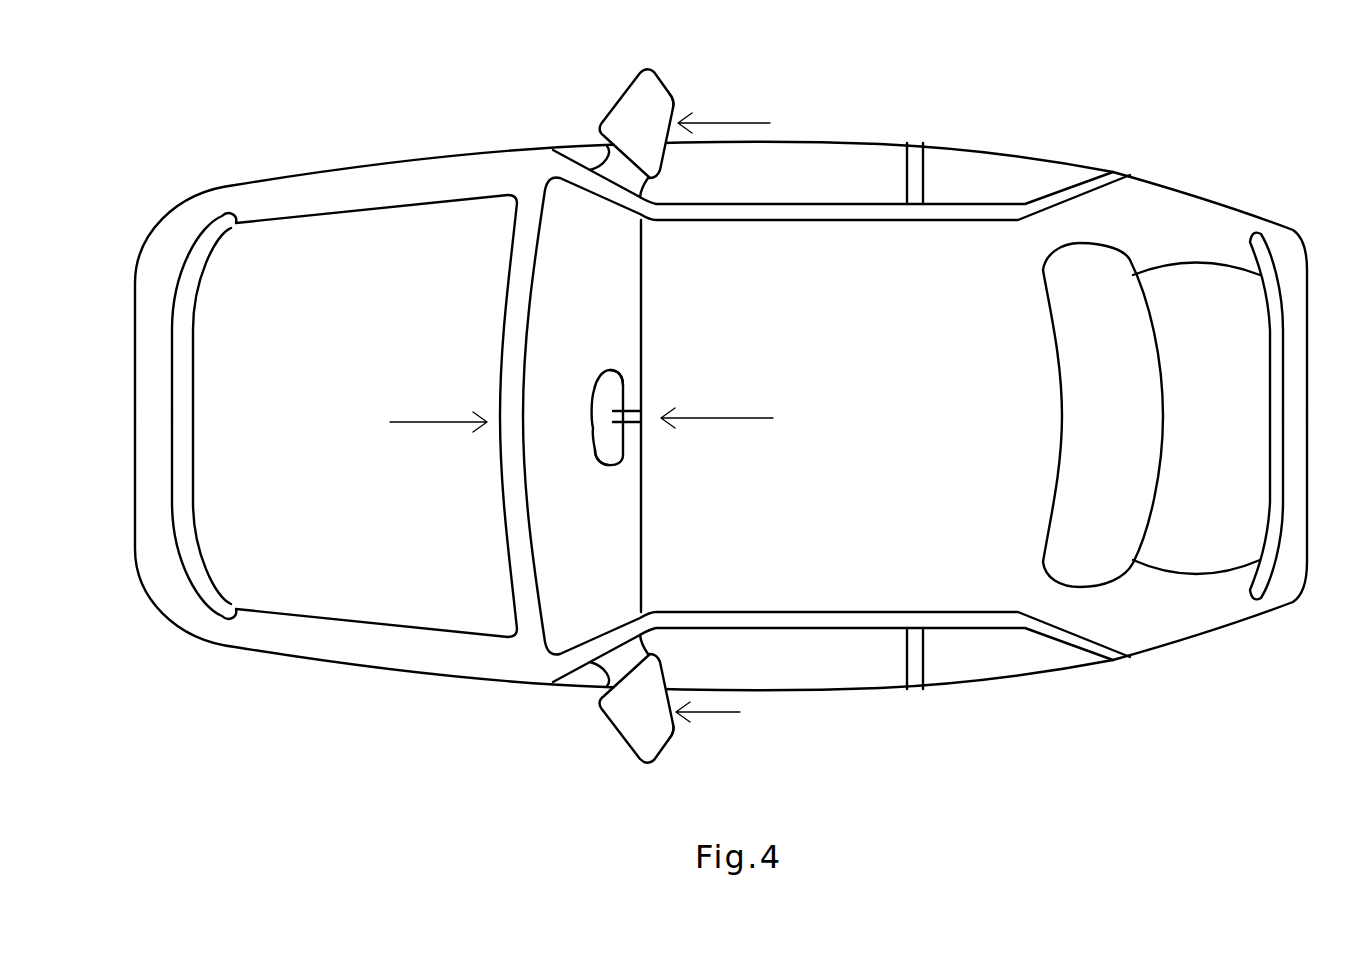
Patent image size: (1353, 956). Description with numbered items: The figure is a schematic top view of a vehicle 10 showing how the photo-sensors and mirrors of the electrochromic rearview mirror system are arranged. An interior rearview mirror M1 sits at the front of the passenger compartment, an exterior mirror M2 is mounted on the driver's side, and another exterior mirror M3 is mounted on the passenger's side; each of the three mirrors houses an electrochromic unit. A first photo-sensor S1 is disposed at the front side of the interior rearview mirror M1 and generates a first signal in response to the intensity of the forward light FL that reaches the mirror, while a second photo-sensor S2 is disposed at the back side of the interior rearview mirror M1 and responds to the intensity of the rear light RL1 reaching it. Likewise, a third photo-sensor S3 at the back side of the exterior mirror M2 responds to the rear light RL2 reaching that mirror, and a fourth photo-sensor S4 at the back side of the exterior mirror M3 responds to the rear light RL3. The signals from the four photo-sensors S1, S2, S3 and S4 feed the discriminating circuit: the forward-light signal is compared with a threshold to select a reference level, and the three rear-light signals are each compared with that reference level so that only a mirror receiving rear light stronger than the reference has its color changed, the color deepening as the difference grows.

The vehicle 10 is at (280, 258).
The interior rearview mirror M1 is at (613, 437).
The exterior mirror at the driver's side M2 is at (632, 122).
The exterior mirror at the passenger's side M3 is at (628, 702).
The first photo-sensor S1 is at (598, 448).
The second photo-sensor S2 is at (625, 390).
The third photo-sensor S3 is at (675, 108).
The fourth photo-sensor S4 is at (673, 727).
The forward light FL is at (415, 422).
The rear light reaching the interior rearview mirror RL1 is at (744, 418).
The rear light reaching the driver's side exterior mirror RL2 is at (752, 123).
The rear light reaching the passenger's side exterior mirror RL3 is at (750, 712).